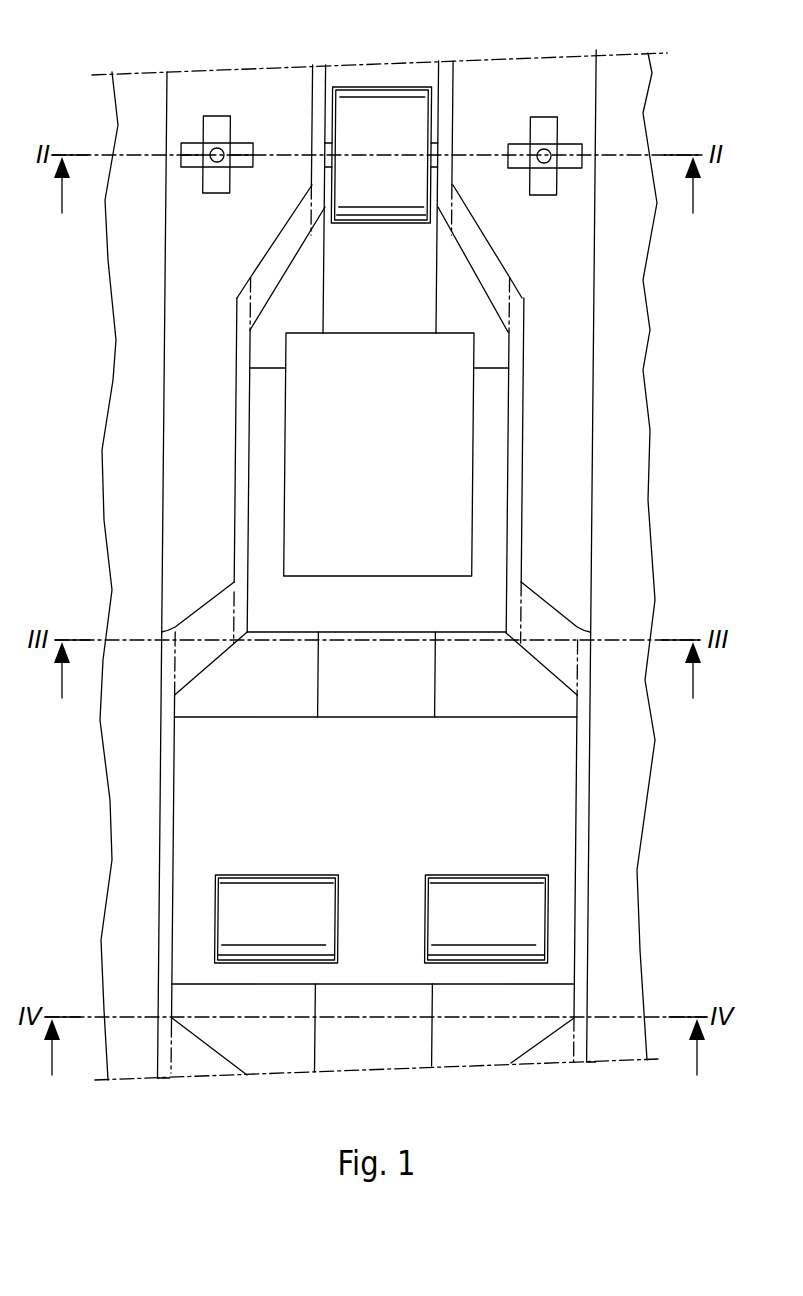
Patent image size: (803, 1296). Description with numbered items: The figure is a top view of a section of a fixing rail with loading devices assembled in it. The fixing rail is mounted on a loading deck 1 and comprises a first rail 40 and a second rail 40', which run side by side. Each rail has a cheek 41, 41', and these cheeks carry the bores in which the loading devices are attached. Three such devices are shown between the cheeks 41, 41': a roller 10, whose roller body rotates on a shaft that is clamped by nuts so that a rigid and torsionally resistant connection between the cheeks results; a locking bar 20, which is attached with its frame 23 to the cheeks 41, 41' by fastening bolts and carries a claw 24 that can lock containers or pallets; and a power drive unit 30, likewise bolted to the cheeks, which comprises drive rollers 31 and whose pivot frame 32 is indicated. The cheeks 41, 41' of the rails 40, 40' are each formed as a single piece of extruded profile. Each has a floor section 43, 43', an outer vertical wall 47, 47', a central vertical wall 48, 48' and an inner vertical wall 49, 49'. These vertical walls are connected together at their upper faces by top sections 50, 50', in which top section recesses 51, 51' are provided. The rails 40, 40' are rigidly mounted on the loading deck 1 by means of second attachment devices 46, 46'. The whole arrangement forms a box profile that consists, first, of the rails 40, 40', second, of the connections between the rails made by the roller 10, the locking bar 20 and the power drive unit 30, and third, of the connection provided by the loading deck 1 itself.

The loading deck 1 is at (632, 320).
The roller 10 is at (406, 78).
The locking bar 20 is at (439, 510).
The frame 23 is at (493, 460).
The claw 24 is at (379, 454).
The power drive unit 30 is at (554, 852).
The roller 31 is at (463, 890).
The pivot frame 32 is at (557, 790).
The rail 40 is at (216, 1095).
The rail 40' is at (526, 1091).
The cheek 41 is at (113, 575).
The cheek 41' is at (647, 556).
The floor section 43 is at (243, 1058).
The floor section 43' is at (503, 1056).
The second attachment device 46 is at (233, 143).
The second attachment device 46' is at (545, 129).
The outer vertical wall 47 is at (179, 640).
The outer vertical wall 47' is at (577, 664).
The central vertical wall 48 is at (216, 460).
The central vertical wall 48' is at (517, 414).
The inner vertical wall 49 is at (286, 183).
The inner vertical wall 49' is at (480, 179).
The top section 50 is at (269, 241).
The top section 50' is at (555, 592).
The top section recess 51 is at (509, 269).
The top section recess 51' is at (250, 268).